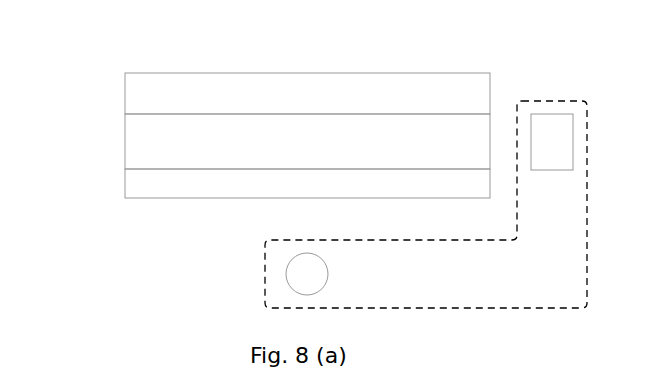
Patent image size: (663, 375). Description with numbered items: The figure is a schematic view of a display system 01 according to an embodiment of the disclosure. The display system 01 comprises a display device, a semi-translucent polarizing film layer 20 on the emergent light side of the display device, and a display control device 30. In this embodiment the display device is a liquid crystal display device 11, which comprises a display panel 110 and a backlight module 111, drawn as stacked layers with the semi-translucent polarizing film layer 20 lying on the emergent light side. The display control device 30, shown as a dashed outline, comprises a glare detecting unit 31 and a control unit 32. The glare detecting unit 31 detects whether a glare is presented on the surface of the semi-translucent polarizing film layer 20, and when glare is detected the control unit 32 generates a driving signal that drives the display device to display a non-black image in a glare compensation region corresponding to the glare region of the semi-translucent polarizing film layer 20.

The display system 01 is at (54, 27).
The liquid crystal display device 11 is at (69, 73).
The backlight module 111 is at (140, 91).
The display panel 110 is at (140, 139).
The semi-translucent polarizing film layer 20 is at (140, 181).
The display control device 30 is at (263, 273).
The glare detecting unit 31 is at (539, 155).
The control unit 32 is at (306, 275).